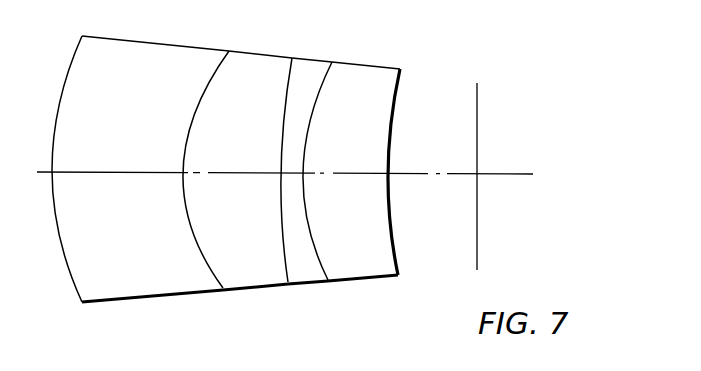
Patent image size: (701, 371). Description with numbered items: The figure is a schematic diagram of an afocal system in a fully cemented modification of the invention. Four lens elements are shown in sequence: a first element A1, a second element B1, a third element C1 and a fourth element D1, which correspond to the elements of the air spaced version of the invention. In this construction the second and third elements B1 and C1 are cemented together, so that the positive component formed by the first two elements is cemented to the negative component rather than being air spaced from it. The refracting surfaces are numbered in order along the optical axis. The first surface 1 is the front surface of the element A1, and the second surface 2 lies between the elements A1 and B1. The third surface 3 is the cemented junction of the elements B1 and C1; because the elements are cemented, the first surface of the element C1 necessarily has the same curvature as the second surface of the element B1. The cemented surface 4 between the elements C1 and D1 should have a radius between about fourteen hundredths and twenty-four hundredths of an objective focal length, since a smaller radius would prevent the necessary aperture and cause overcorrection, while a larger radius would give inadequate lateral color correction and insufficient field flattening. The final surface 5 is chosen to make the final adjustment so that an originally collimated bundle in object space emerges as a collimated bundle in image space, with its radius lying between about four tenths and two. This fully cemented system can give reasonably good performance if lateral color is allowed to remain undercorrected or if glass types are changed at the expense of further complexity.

The first surface 1 is at (67, 270).
The second surface 2 is at (207, 265).
The third surface 3 is at (285, 262).
The cemented surface 4 is at (322, 265).
The final surface 5 is at (395, 260).
The first element A1 is at (150, 45).
The second element B1 is at (237, 54).
The third element C1 is at (298, 58).
The fourth element D1 is at (357, 64).